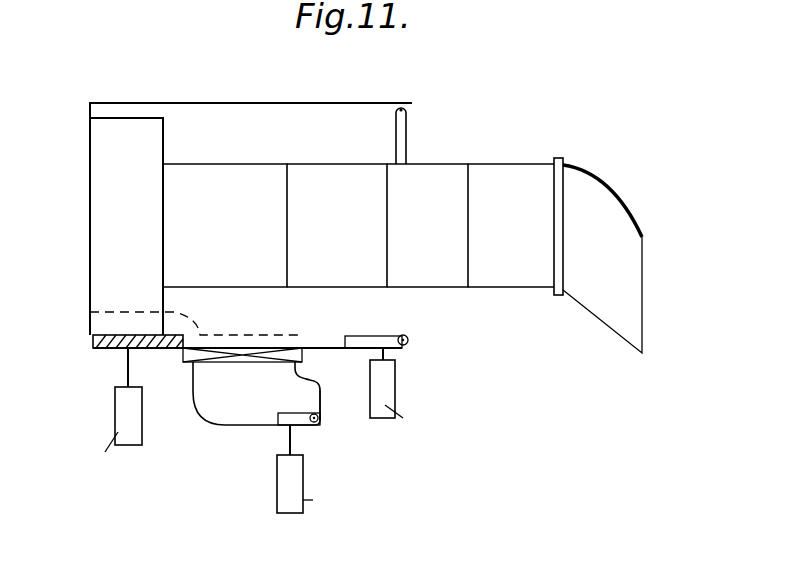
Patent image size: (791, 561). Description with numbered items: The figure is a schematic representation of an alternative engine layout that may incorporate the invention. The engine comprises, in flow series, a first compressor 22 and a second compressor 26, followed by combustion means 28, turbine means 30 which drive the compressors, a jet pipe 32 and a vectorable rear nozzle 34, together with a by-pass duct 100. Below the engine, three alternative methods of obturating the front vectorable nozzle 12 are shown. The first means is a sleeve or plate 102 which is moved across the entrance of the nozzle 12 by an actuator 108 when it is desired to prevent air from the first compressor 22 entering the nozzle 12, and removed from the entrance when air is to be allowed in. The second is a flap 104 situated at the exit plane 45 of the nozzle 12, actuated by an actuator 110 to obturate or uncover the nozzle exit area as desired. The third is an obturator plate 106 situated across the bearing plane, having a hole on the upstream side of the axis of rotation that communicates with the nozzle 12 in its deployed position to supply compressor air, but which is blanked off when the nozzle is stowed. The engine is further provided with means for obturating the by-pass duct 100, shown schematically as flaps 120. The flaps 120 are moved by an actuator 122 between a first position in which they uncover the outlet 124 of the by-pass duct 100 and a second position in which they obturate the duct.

The first axial flow compressor 22 is at (123, 129).
The second axial flow compressor 26 is at (197, 180).
The by-pass duct 100 is at (288, 123).
The combustion means 28 is at (337, 180).
The turbine means 30 is at (442, 178).
The jet pipe 32 is at (523, 178).
The vectorable rear nozzle 34 is at (590, 177).
The sleeve or plate 102 is at (95, 340).
The actuator 108 is at (125, 398).
The obturator plate 106 is at (262, 348).
The nozzle 12 is at (205, 408).
The flap 104 is at (278, 422).
The exit plane 45 is at (320, 402).
The actuator 110 is at (280, 493).
The flaps 120 is at (405, 346).
The actuator 122 is at (385, 390).
The outlet 124 is at (413, 310).